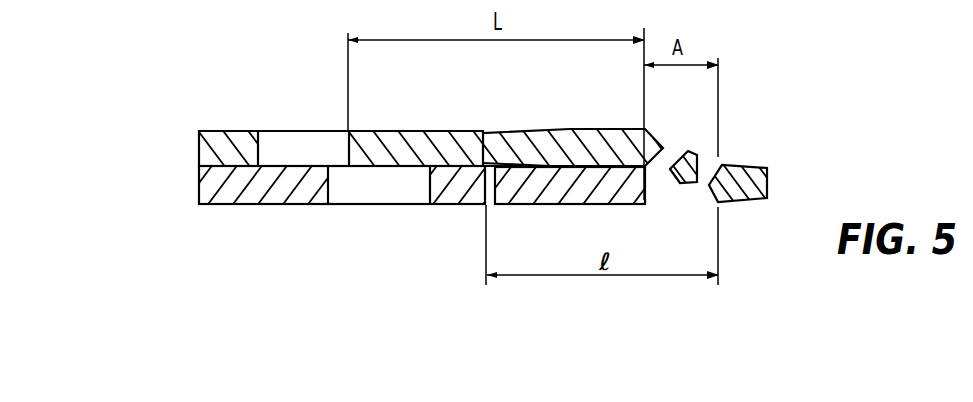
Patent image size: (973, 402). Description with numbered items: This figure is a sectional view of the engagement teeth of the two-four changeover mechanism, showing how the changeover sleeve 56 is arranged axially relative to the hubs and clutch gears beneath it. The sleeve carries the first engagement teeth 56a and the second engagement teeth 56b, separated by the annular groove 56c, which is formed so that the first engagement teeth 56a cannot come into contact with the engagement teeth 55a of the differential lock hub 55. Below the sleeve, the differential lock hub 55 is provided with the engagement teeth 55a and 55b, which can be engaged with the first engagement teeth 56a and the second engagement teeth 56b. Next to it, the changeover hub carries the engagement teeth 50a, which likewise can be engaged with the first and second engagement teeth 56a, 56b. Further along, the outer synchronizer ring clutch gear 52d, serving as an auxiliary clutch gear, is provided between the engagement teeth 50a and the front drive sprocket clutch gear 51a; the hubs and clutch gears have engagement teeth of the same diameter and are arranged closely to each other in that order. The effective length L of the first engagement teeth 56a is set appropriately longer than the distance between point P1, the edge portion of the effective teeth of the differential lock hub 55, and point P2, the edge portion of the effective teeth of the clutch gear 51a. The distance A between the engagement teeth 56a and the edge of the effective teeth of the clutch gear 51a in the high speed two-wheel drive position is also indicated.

The second engagement teeth 56b is at (224, 139).
The annular groove 56c is at (292, 138).
The 2/4 changeover sleeve 56 is at (387, 130).
The first engagement teeth 56a is at (515, 142).
The engagement teeth 55a is at (278, 200).
The differential lock hub 55 is at (395, 205).
The engagement teeth 55b is at (473, 197).
The engagement teeth 50a is at (563, 200).
The outer synchronizer ring clutch gear 52d is at (680, 185).
The front drive sprocket clutch gear 51a is at (757, 197).
The point P1 is at (488, 208).
The point P2 is at (723, 160).